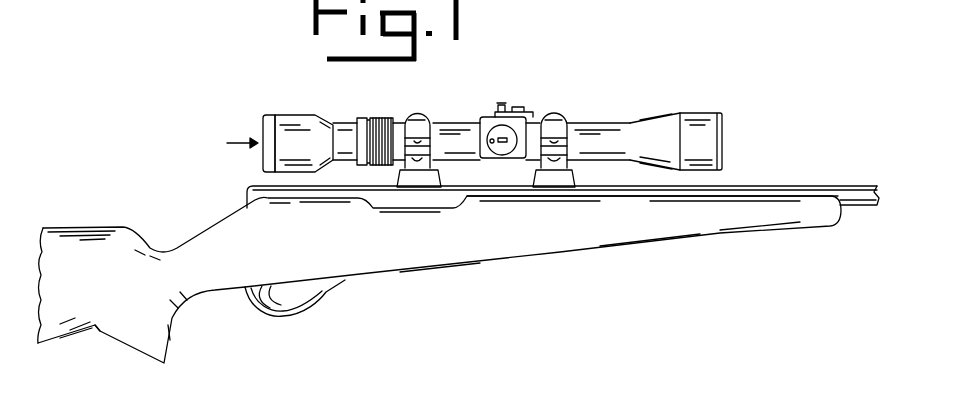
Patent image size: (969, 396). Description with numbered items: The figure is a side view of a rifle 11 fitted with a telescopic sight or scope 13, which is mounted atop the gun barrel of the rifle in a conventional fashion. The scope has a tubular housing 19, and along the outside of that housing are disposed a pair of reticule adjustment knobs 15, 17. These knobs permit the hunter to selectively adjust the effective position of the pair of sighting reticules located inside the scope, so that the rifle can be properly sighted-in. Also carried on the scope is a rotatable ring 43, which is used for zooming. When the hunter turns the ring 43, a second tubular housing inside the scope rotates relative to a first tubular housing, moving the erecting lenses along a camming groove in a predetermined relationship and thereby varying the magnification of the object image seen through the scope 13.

The rifle 11 is at (548, 256).
The telescopic sight 13 is at (301, 101).
The reticule adjustment knob 15 is at (523, 136).
The reticule adjustment knob 17 is at (505, 103).
The tubular housing 19 is at (447, 122).
The rotatable ring 43 is at (360, 117).